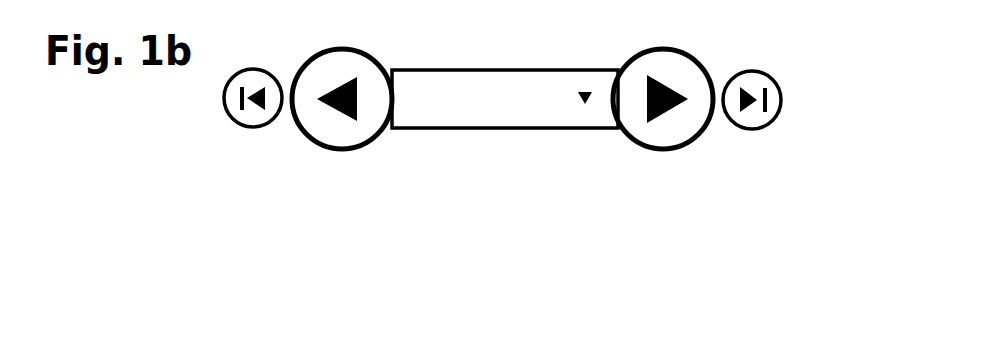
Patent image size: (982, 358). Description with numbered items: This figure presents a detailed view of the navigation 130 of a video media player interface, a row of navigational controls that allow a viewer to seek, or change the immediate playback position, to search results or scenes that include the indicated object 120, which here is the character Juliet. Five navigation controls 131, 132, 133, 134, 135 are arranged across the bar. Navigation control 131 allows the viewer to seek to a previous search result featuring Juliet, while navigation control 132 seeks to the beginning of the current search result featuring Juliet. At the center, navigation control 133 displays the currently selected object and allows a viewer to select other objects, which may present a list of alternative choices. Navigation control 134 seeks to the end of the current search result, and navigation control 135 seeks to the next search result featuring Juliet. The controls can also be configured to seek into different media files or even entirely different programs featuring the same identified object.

The object 120 is at (639, 66).
The navigation 130 is at (461, 174).
The navigation control 131 is at (256, 147).
The navigation control 132 is at (223, 163).
The navigation control 133 is at (588, 148).
The navigation control 134 is at (667, 166).
The navigation control 135 is at (623, 209).